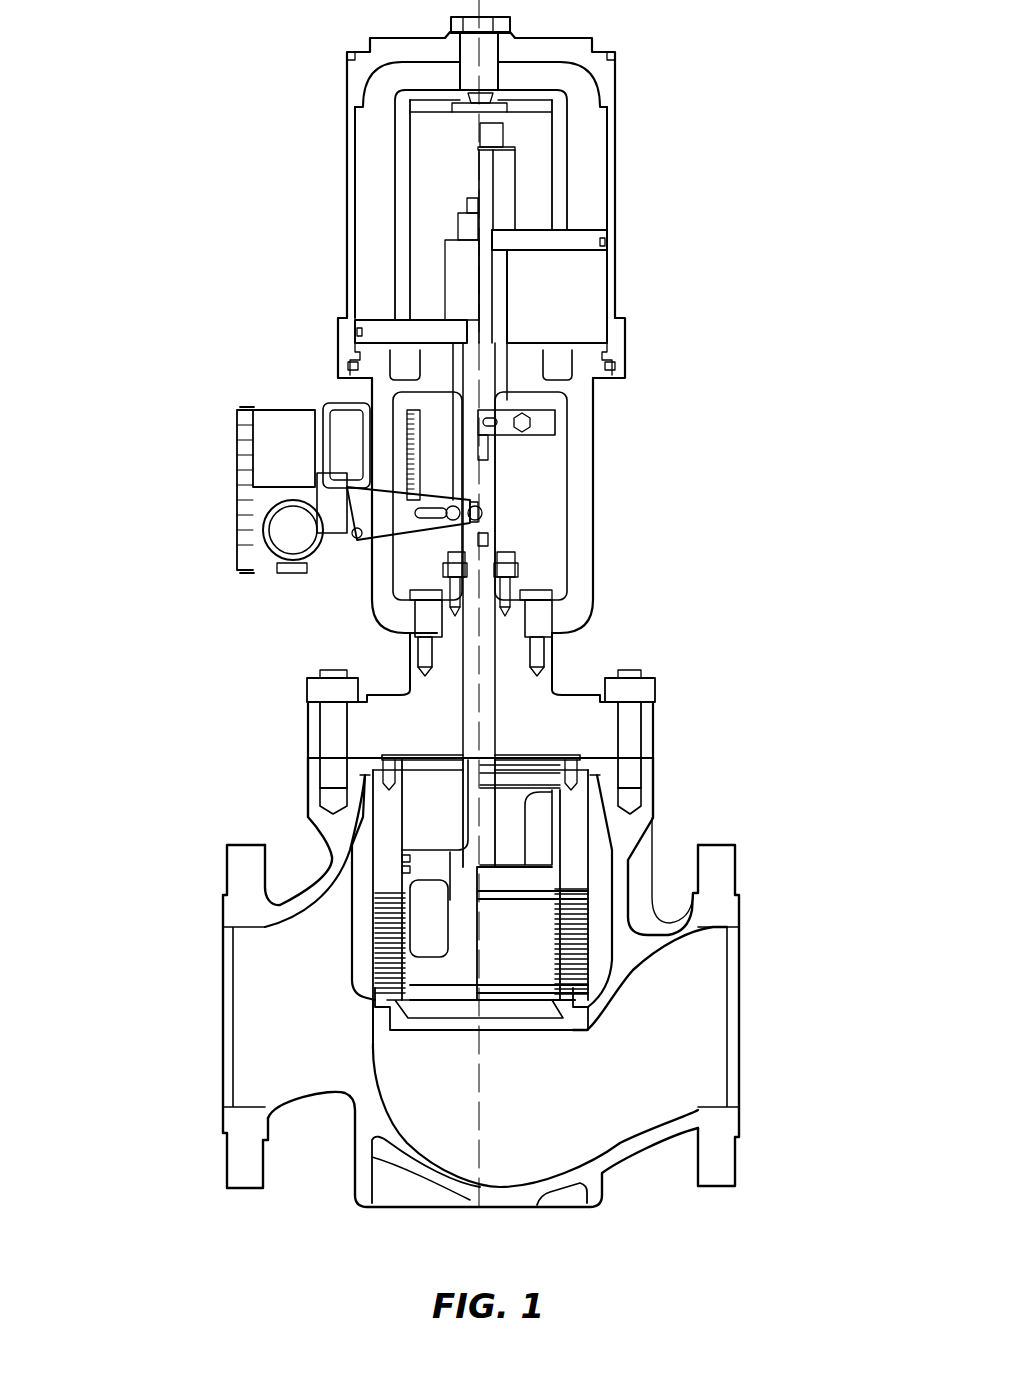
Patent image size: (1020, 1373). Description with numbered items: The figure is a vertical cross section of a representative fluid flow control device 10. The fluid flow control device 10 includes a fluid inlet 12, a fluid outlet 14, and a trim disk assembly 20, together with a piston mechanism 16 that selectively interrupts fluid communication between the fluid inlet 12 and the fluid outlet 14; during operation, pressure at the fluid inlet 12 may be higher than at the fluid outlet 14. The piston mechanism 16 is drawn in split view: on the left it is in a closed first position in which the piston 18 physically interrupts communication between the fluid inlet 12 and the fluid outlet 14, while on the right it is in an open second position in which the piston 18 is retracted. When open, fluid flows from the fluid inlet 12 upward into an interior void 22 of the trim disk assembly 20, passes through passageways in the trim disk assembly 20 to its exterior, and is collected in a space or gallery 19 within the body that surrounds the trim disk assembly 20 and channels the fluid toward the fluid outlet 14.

The fluid flow control device 10 is at (128, 278).
The fluid inlet 12 is at (778, 1058).
The fluid outlet 14 is at (210, 1049).
The piston mechanism 16 is at (737, 28).
The piston 18 is at (500, 832).
The space or gallery 19 is at (363, 884).
The trim disk assembly 20 is at (357, 946).
The interior void 22 is at (523, 942).